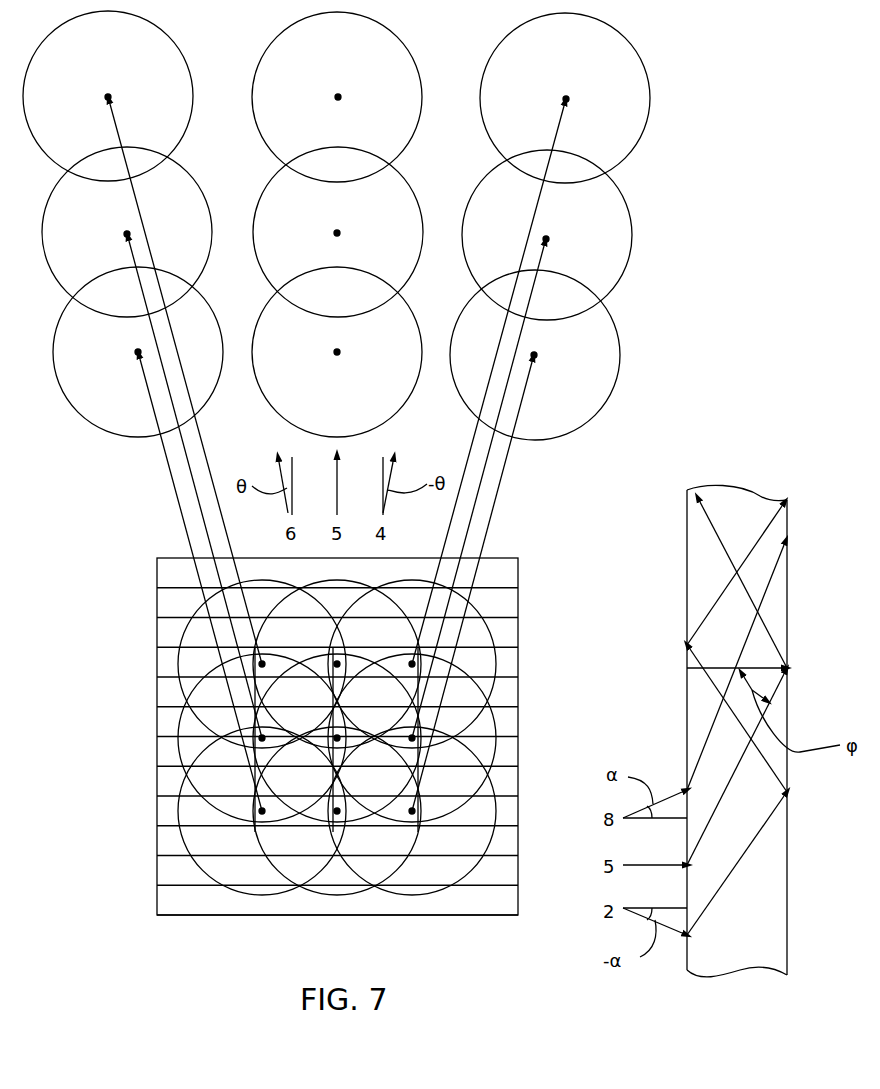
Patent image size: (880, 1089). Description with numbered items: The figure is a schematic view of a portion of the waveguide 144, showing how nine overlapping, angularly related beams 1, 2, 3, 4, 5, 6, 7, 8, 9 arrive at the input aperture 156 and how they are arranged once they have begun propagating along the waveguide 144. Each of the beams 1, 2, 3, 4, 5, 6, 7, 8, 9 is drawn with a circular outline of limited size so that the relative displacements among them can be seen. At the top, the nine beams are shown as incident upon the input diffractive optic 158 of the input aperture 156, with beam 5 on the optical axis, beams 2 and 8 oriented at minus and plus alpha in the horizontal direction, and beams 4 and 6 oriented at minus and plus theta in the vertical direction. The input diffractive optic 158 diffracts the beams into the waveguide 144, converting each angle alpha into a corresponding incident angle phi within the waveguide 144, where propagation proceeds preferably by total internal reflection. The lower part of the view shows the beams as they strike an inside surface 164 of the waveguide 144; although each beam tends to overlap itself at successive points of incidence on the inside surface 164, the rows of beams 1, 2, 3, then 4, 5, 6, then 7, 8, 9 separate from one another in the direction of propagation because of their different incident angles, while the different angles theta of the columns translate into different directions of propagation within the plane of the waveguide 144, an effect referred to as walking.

The input aperture 156 is at (150, 708).
The input diffractive optic 158 is at (462, 915).
The inside surface 164 is at (687, 559).
The waveguide 144 is at (776, 974).
The beam 1 is at (534, 355).
The beam 2 is at (337, 354).
The beam 3 is at (137, 354).
The beam 4 is at (546, 239).
The beam 5 is at (337, 232).
The beam 6 is at (126, 234).
The beam 7 is at (566, 97).
The beam 8 is at (338, 95).
The beam 9 is at (108, 95).